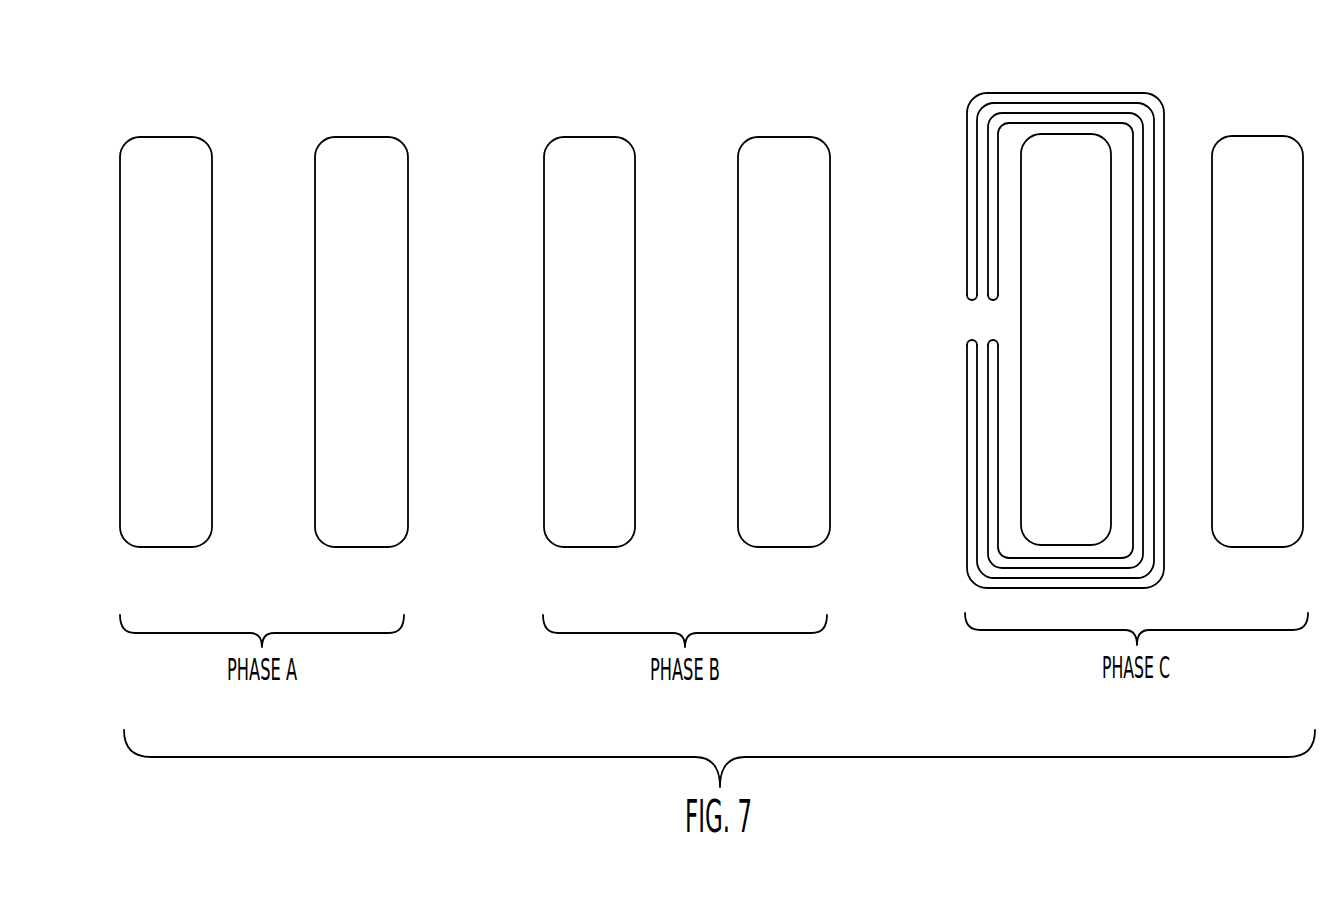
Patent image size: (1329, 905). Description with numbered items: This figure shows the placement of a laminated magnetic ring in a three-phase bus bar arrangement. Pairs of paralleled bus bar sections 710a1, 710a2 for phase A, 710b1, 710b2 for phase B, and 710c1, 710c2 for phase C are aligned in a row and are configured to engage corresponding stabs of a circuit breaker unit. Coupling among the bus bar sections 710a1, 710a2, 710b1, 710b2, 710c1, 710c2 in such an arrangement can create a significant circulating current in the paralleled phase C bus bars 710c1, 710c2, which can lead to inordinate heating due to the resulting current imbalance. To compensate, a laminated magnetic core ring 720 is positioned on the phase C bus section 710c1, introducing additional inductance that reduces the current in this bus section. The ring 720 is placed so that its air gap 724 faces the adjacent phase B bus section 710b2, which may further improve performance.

The bus bar section 710a1 is at (175, 137).
The bus bar section 710a2 is at (378, 137).
The bus bar section 710b1 is at (598, 137).
The bus bar section 710b2 is at (803, 137).
The bus bar section 710c1 is at (1020, 323).
The bus bar section 710c2 is at (1275, 136).
The laminated magnetic core ring 720 is at (1023, 83).
The air gap 724 is at (962, 333).